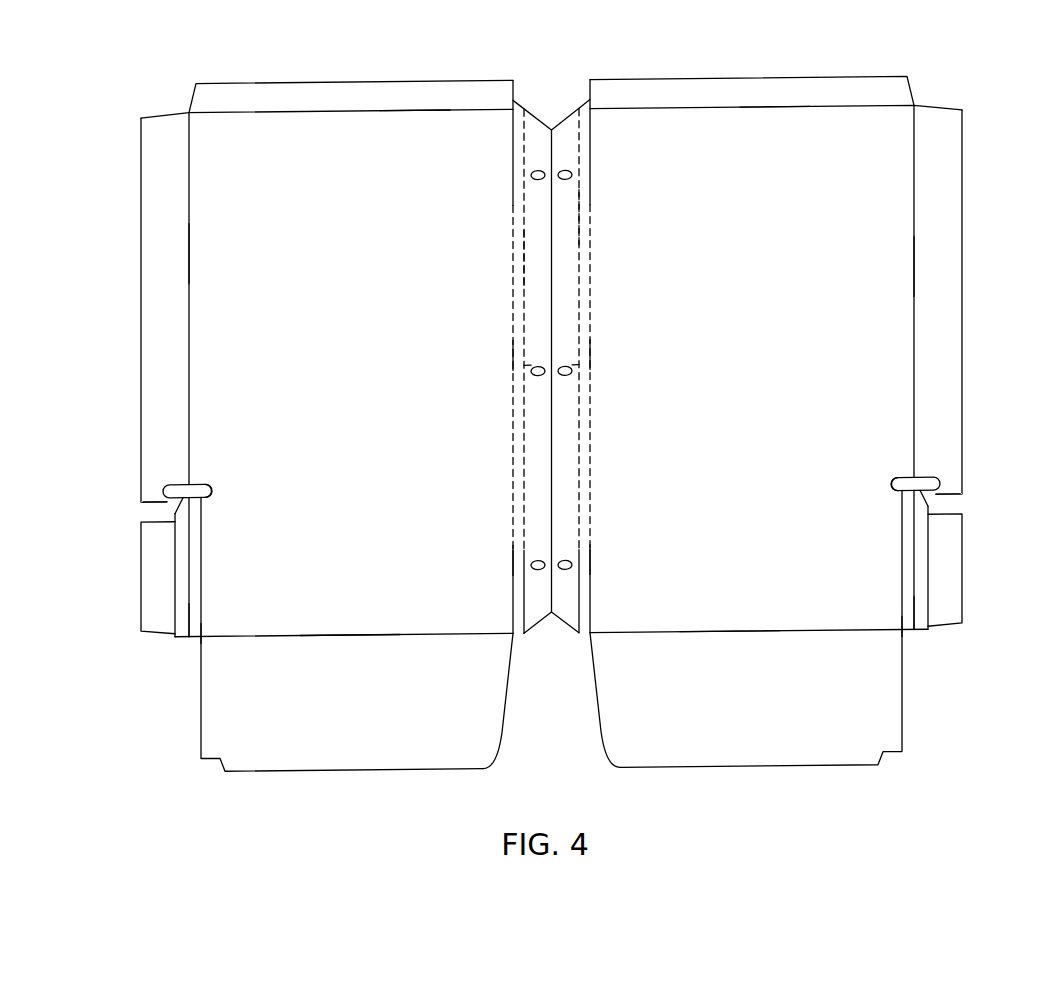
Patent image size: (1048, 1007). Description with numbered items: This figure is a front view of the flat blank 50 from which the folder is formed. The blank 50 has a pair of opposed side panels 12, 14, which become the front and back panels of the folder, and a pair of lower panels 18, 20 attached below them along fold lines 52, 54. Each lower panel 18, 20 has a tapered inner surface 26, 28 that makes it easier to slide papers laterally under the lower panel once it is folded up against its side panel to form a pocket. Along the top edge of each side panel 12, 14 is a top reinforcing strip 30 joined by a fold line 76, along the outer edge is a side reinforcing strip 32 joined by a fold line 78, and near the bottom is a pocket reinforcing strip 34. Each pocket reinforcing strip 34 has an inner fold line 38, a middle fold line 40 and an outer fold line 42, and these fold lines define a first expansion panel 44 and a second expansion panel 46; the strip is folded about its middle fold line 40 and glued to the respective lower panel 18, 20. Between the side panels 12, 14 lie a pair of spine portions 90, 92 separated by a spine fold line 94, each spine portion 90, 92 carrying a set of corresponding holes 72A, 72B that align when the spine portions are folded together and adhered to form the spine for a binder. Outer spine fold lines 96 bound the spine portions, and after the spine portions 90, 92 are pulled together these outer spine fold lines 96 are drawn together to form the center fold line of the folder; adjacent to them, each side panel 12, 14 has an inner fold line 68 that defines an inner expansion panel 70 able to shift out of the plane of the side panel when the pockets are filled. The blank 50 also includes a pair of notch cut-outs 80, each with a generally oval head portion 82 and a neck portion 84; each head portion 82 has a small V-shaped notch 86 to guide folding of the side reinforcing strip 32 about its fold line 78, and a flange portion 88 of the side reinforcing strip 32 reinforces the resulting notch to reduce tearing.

The side panel 12 is at (244, 118).
The side panel 14 is at (858, 108).
The lower panel 18 is at (201, 703).
The lower panel 20 is at (902, 705).
The tapered inner surface 26 is at (500, 735).
The tapered inner surface 28 is at (590, 695).
The top reinforcing strip 30 is at (350, 82).
The side reinforcing strip 32 is at (141, 297).
The pocket reinforcing strip 34 is at (141, 538).
The inner fold line 38 is at (172, 633).
The middle fold line 40 is at (190, 610).
The outer fold line 42 is at (203, 625).
The first expansion panel 44 is at (190, 540).
The second expansion panel 46 is at (202, 577).
The blank 50 is at (555, 101).
The fold line 52 is at (345, 633).
The fold line 54 is at (720, 633).
The inner fold line 68 is at (516, 355).
The inner expansion panel 70 is at (530, 373).
The holes 72A is at (531, 177).
The holes 72B is at (572, 177).
The fold line 76 is at (410, 110).
The fold line 78 is at (189, 251).
The notch cut-out 80 is at (176, 481).
The head portion 82 is at (212, 487).
The neck portion 84 is at (150, 510).
The V-shaped notch 86 is at (193, 481).
The flange portion 88 is at (162, 480).
The spine portion 90 is at (526, 258).
The spine portion 92 is at (572, 218).
The spine fold line 94 is at (553, 261).
The outer spine fold line 96 is at (527, 557).